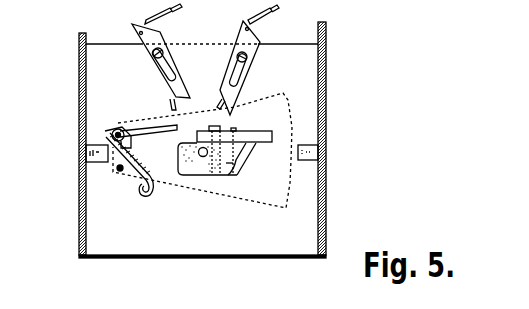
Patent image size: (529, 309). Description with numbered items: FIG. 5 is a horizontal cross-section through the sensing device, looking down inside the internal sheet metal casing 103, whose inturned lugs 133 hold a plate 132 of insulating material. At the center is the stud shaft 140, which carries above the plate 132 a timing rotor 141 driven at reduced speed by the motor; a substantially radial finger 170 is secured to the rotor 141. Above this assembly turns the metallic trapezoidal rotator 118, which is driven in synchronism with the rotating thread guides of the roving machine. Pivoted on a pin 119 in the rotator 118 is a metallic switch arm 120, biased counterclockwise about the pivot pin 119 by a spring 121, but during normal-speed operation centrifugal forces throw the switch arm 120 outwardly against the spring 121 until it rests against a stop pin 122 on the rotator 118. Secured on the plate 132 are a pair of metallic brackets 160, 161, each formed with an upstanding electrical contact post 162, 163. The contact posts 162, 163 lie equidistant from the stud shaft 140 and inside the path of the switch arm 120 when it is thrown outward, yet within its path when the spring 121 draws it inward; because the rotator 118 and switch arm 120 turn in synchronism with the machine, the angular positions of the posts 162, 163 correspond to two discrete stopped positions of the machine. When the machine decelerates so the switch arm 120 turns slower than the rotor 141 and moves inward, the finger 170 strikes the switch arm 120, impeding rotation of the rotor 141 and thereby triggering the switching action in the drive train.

The internal sheet metal casing 103 is at (326, 73).
The plate of insulating material 132 is at (300, 98).
The metallic bracket 160 is at (138, 36).
The metallic bracket 161 is at (238, 38).
The electrical contact post 162 is at (177, 97).
The electrical contact post 163 is at (220, 103).
The pivot pin 119 is at (119, 128).
The spring 121 is at (160, 126).
The switch arm 120 is at (138, 193).
The stop pin 122 is at (113, 170).
The rotator 118 is at (263, 204).
The inturned lugs 133 is at (79, 150).
The radial finger 170 is at (258, 137).
The stud shaft 140 is at (201, 156).
The timing rotor 141 is at (234, 164).